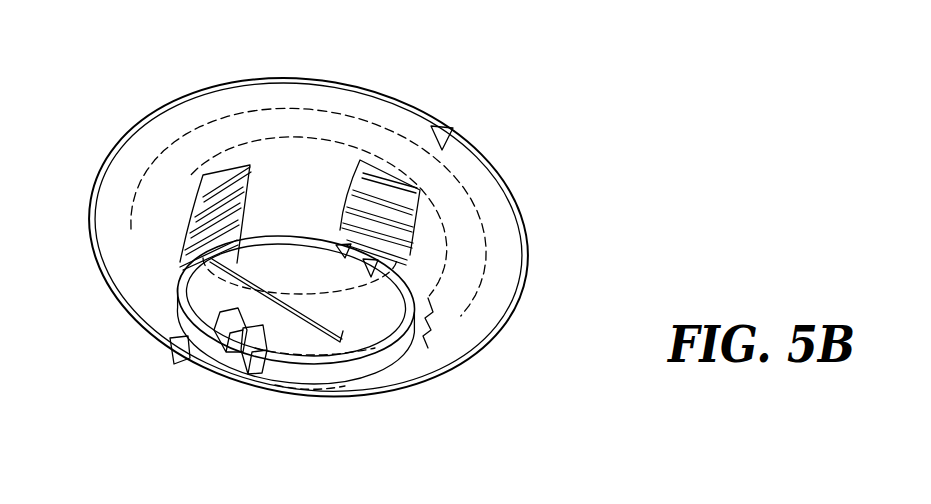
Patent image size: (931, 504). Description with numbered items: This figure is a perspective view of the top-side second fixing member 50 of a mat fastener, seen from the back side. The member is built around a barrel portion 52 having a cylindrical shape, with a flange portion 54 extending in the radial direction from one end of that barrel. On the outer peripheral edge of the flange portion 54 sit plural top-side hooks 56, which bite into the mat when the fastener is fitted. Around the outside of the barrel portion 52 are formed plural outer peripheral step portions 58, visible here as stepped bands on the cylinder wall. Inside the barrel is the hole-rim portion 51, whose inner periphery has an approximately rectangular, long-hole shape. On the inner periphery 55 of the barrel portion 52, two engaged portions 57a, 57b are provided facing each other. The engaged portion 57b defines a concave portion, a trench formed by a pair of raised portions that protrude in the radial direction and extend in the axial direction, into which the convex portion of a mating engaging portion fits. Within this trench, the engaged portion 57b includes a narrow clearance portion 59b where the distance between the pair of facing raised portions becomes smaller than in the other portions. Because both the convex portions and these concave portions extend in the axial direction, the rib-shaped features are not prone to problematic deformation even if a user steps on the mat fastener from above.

The top-side second fixing member 50 is at (303, 450).
The hole-rim portion 51 is at (270, 299).
The barrel portion 52 is at (310, 155).
The flange portion 54 is at (505, 172).
The inner periphery 55 is at (360, 363).
The top-side hook 56 is at (447, 133).
The engaged portion 57a is at (330, 269).
The engaged portion 57b is at (232, 345).
The outer peripheral step portion 58 is at (186, 200).
The narrow clearance portion 59b is at (240, 378).